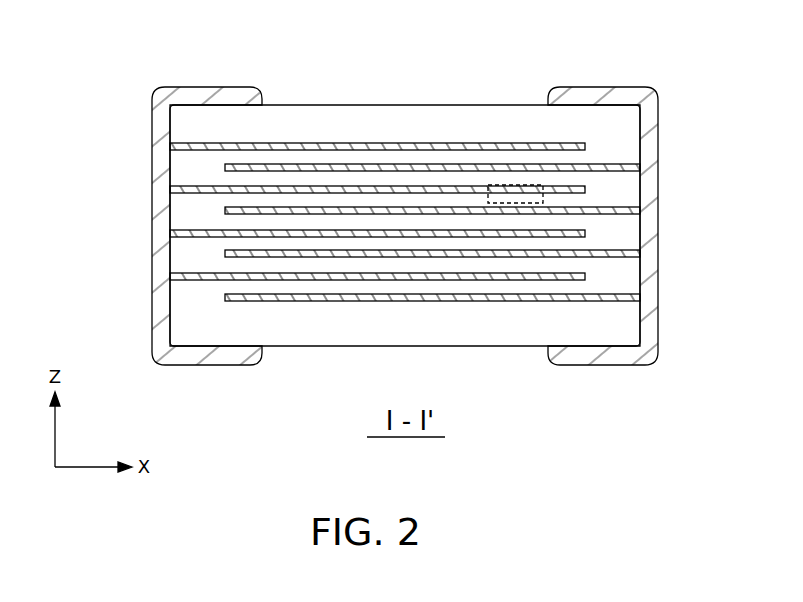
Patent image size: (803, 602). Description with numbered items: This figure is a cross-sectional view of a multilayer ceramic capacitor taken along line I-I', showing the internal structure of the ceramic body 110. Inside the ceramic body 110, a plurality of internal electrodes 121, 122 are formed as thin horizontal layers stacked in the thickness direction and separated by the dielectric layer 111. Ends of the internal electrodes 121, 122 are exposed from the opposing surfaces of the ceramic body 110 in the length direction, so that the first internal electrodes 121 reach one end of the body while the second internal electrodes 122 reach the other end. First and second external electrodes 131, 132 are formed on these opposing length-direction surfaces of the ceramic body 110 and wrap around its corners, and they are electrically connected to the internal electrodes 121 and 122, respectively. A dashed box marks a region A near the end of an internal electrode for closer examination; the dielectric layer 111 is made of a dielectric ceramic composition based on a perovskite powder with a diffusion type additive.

The ceramic body 110 is at (407, 105).
The dielectric layer 111 is at (182, 161).
The first internal electrode 121 is at (205, 145).
The second internal electrode 122 is at (226, 170).
The first external electrode 131 is at (207, 88).
The second external electrode 132 is at (605, 88).
The enlarged region A is at (543, 200).